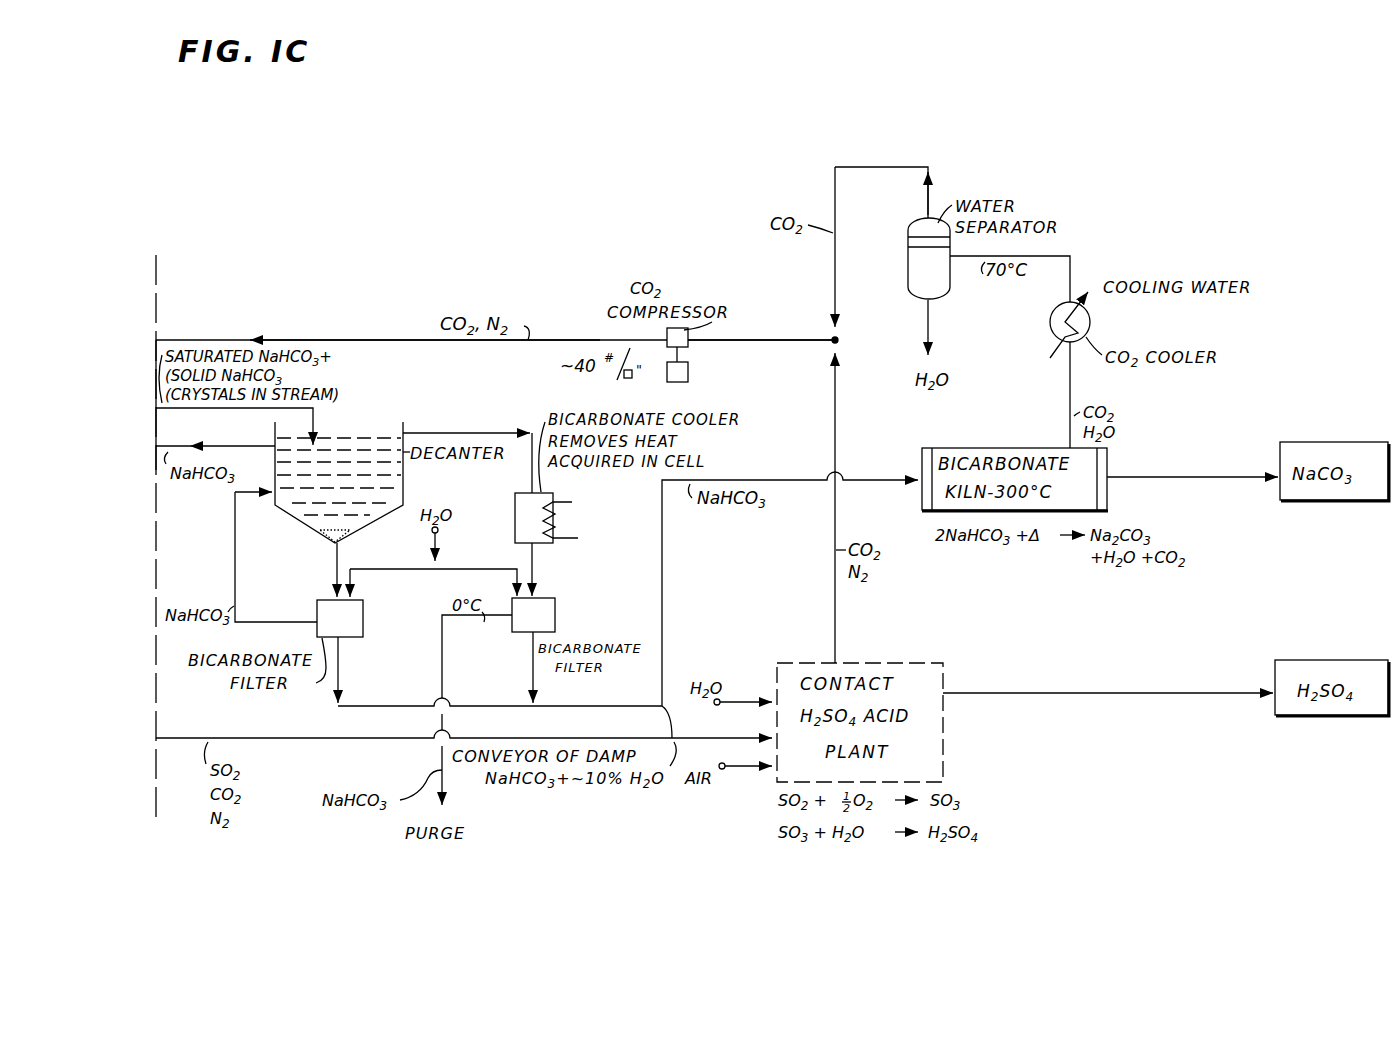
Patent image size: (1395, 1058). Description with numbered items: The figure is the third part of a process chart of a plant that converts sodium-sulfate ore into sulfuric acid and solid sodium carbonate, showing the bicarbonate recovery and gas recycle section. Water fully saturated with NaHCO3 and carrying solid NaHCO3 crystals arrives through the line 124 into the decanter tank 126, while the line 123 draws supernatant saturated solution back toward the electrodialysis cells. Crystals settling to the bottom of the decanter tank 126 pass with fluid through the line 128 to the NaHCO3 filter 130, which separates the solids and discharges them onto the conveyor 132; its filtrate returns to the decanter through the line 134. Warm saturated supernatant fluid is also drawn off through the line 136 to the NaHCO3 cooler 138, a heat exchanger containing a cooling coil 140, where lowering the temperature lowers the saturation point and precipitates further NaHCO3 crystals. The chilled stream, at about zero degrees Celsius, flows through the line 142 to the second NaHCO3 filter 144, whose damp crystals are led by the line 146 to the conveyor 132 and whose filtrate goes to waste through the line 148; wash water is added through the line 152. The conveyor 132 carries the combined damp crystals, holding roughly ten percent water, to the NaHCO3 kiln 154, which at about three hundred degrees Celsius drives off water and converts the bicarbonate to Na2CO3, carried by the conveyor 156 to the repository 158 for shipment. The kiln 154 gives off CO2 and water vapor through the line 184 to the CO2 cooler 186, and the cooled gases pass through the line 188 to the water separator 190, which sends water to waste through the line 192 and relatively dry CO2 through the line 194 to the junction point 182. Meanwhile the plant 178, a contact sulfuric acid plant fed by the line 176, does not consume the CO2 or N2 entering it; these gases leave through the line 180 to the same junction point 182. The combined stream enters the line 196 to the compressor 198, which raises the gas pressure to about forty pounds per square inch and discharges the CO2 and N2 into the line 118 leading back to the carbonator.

The line 118 is at (372, 346).
The line 123 is at (258, 446).
The line 124 is at (215, 412).
The decanter tank 126 is at (274, 508).
The line 128 is at (336, 566).
The NaHCO3 filter 130 is at (363, 626).
The conveyor 132 is at (470, 712).
The line 134 is at (235, 586).
The line 136 is at (463, 436).
The NaHCO3 cooler 138 is at (515, 494).
The cooling coil 140 is at (556, 513).
The line 142 is at (540, 570).
The second NaHCO3 filter 144 is at (555, 608).
The line 146 is at (523, 678).
The line 148 is at (439, 676).
The line 152 is at (430, 545).
The NaHCO3 kiln 154 is at (1016, 446).
The conveyor 156 is at (1192, 476).
The repository 158 is at (1350, 440).
The line 176 is at (352, 745).
The plant 178 is at (946, 675).
The line 180 is at (835, 630).
The junction point 182 is at (838, 340).
The line 184 is at (1070, 396).
The CO2 cooler 186 is at (1090, 321).
The line 188 is at (1062, 253).
The water separator 190 is at (908, 264).
The line 192 is at (932, 323).
The line 194 is at (888, 155).
The line 196 is at (773, 342).
The compressor 198 is at (688, 352).